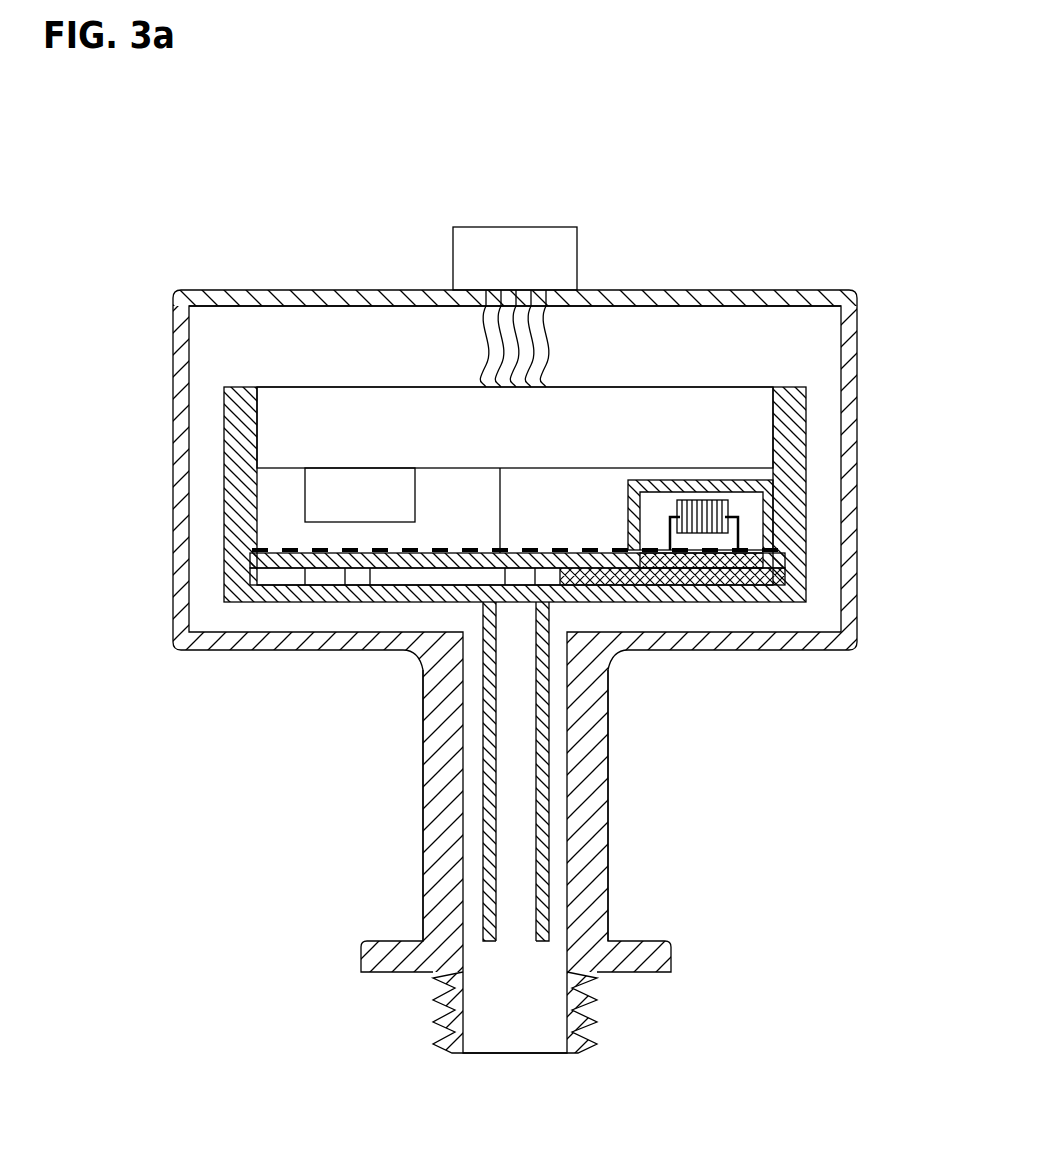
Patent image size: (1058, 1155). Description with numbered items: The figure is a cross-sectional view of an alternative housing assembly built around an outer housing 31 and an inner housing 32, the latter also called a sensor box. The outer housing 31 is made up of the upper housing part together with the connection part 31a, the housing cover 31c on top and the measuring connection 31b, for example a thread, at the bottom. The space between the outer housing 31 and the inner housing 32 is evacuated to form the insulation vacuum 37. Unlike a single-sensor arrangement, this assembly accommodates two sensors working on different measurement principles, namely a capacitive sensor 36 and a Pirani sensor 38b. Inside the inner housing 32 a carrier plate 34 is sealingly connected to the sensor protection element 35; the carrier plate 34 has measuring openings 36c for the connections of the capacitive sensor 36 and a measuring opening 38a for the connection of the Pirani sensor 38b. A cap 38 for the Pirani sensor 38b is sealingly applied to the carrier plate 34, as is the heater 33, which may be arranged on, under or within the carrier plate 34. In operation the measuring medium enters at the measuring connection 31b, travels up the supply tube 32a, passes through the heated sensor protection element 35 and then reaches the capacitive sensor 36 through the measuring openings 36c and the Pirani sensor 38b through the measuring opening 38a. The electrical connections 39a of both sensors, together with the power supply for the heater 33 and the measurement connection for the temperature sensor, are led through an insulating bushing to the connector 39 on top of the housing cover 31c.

The outer housing 31 is at (181, 383).
The connection part 31a is at (442, 794).
The measuring connection 31b is at (451, 1016).
The housing cover 31c is at (215, 298).
The inner housing 32 is at (794, 418).
The supply tube 32a is at (541, 743).
The heater 33 is at (291, 549).
The carrier plate 34 is at (322, 562).
The sensor protection element 35 is at (276, 575).
The capacitive sensor 36 is at (660, 420).
The measuring openings 36c is at (513, 513).
The insulation vacuum 37 is at (557, 820).
The cap 38 is at (750, 484).
The measuring opening 38a is at (707, 563).
The Pirani sensor 38b is at (708, 508).
The connector 39 is at (520, 251).
The electrical connections 39a is at (475, 343).